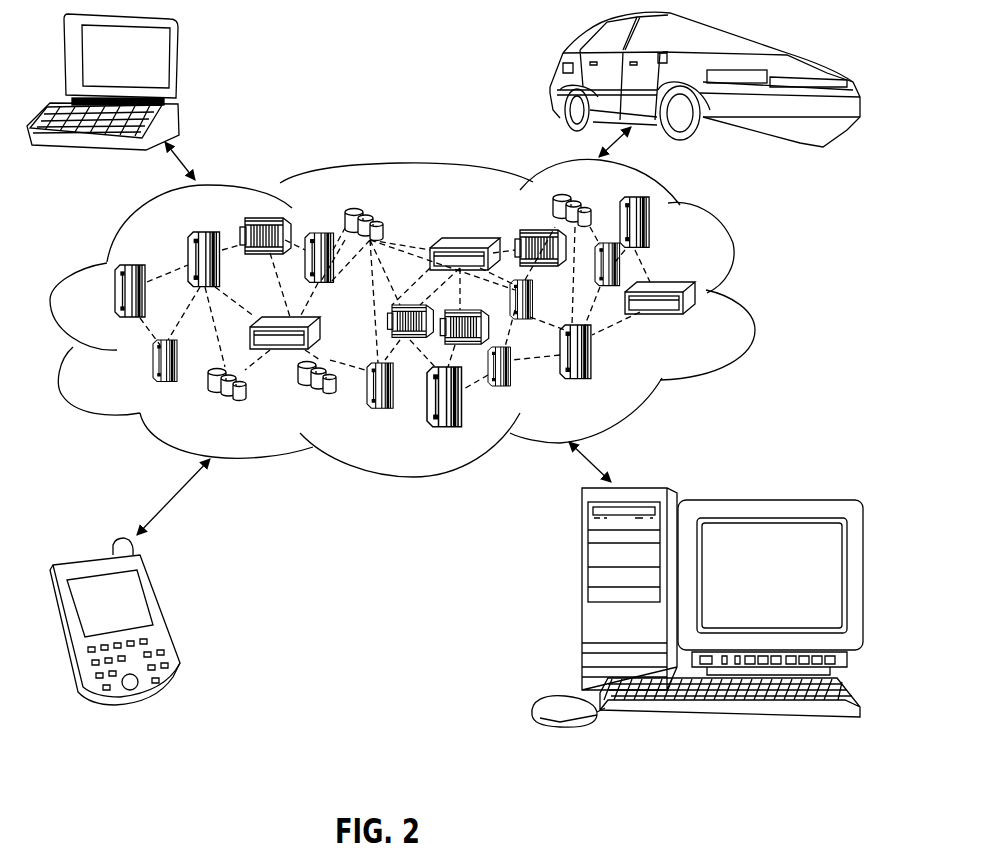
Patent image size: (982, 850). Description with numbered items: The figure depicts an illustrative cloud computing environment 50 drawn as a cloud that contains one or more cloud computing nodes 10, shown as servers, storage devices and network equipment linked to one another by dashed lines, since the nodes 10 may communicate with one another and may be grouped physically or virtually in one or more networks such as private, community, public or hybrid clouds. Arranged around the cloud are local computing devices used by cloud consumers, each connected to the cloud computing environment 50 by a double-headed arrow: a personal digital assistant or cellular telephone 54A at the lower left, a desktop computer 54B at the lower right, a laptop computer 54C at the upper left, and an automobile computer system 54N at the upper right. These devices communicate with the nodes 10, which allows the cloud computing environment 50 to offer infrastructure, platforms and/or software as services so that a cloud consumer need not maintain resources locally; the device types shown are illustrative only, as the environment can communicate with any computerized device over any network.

The cloud computing environment 50 is at (737, 258).
The cloud computing node 10 is at (713, 321).
The personal digital assistant or cellular telephone 54A is at (167, 613).
The desktop computer 54B is at (582, 597).
The laptop computer 54C is at (177, 61).
The automobile computer system 54N is at (557, 70).